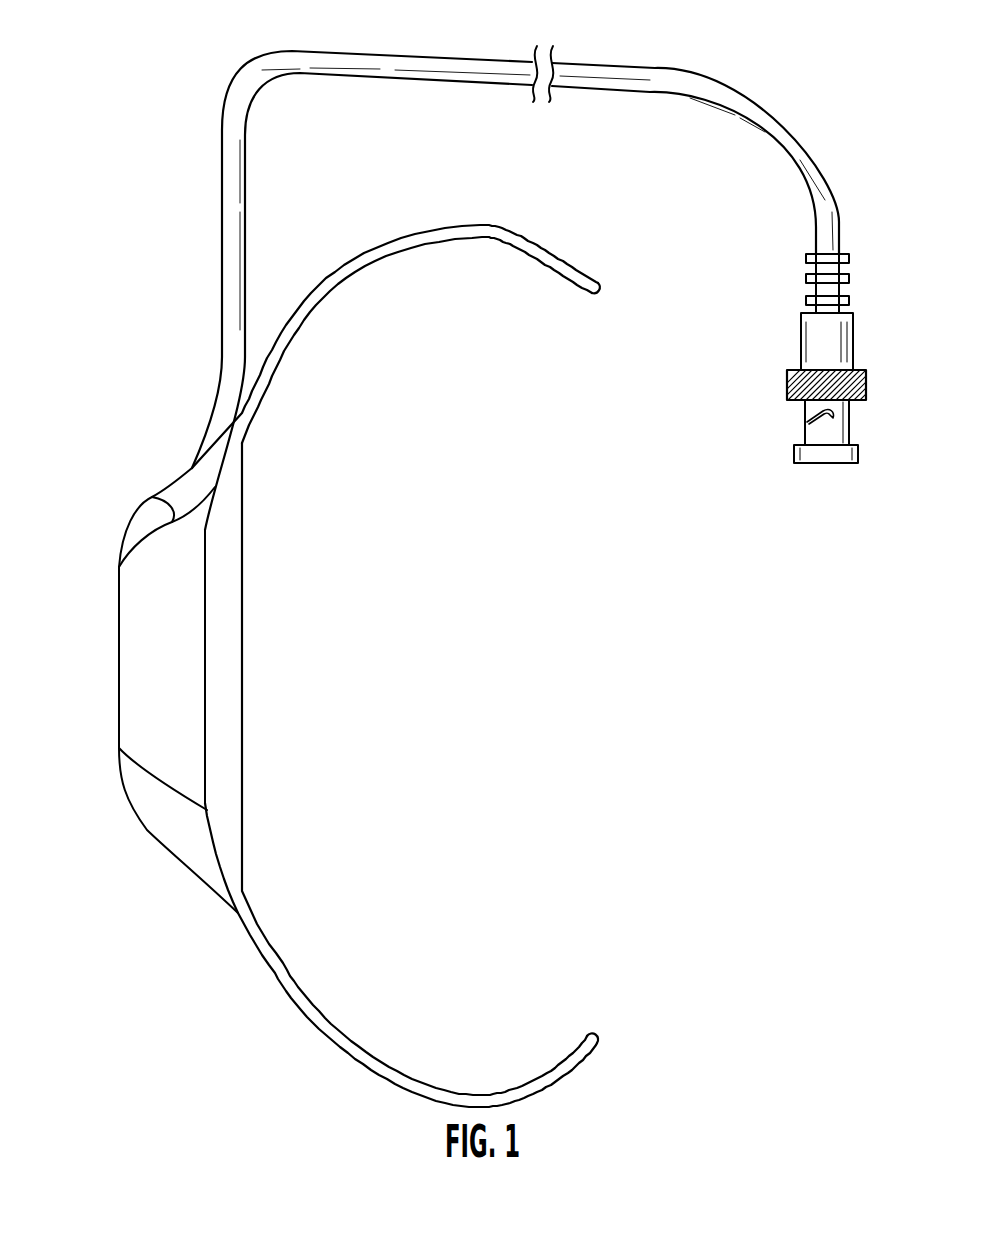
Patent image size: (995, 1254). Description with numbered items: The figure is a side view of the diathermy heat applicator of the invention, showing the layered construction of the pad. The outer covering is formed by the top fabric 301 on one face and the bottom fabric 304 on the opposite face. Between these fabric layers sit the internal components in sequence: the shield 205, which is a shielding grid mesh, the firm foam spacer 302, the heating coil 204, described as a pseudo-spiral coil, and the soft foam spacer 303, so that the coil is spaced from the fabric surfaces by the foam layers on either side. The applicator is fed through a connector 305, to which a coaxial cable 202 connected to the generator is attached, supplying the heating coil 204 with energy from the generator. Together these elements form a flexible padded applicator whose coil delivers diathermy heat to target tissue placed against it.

The coaxial cable 202 is at (753, 115).
The heating coil 204 is at (205, 613).
The shield 205 is at (150, 497).
The top fabric 301 is at (118, 595).
The firm foam spacer 302 is at (140, 661).
The soft foam spacer 303 is at (223, 665).
The bottom fabric 304 is at (243, 725).
The connector 305 is at (787, 380).